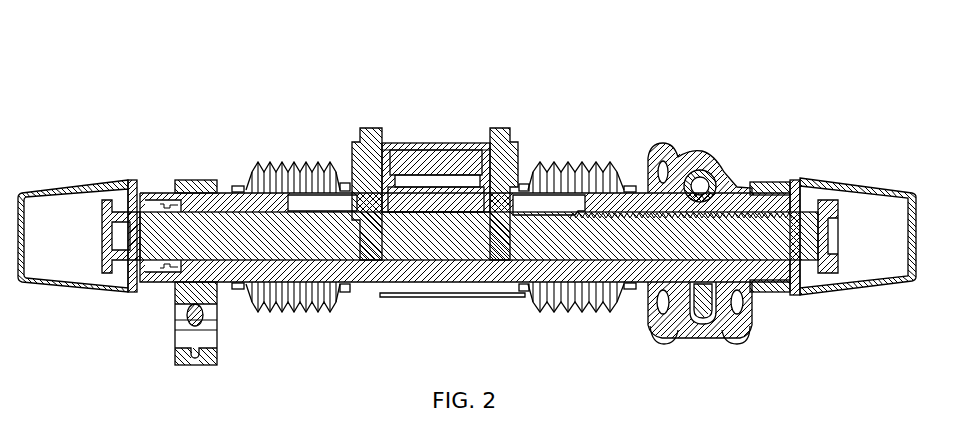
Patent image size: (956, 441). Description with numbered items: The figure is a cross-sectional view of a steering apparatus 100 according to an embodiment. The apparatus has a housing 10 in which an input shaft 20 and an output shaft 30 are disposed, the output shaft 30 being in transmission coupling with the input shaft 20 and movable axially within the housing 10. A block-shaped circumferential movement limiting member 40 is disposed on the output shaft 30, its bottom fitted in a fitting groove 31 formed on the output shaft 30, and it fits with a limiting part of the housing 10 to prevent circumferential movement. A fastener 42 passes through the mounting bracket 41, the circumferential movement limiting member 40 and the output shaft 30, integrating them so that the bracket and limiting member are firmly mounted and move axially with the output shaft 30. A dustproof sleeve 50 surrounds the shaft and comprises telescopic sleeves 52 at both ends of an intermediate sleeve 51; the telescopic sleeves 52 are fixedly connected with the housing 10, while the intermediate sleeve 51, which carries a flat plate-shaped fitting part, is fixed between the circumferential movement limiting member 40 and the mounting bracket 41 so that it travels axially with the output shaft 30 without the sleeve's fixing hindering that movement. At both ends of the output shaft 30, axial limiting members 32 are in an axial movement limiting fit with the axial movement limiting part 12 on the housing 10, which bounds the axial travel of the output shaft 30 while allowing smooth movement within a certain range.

The steering apparatus 100 is at (470, 26).
The housing 10 is at (668, 155).
The axial movement limiting part 12 is at (190, 180).
The input shaft 20 is at (713, 165).
The output shaft 30 is at (628, 190).
The fitting groove 31 is at (518, 208).
The axial limiting member 32 is at (124, 182).
The circumferential movement limiting member 40 is at (474, 156).
The mounting bracket 41 is at (444, 158).
The fastener 42 is at (370, 128).
The dustproof sleeve 50 is at (283, 163).
The intermediate sleeve 51 is at (465, 200).
The telescopic sleeve 52 is at (594, 163).